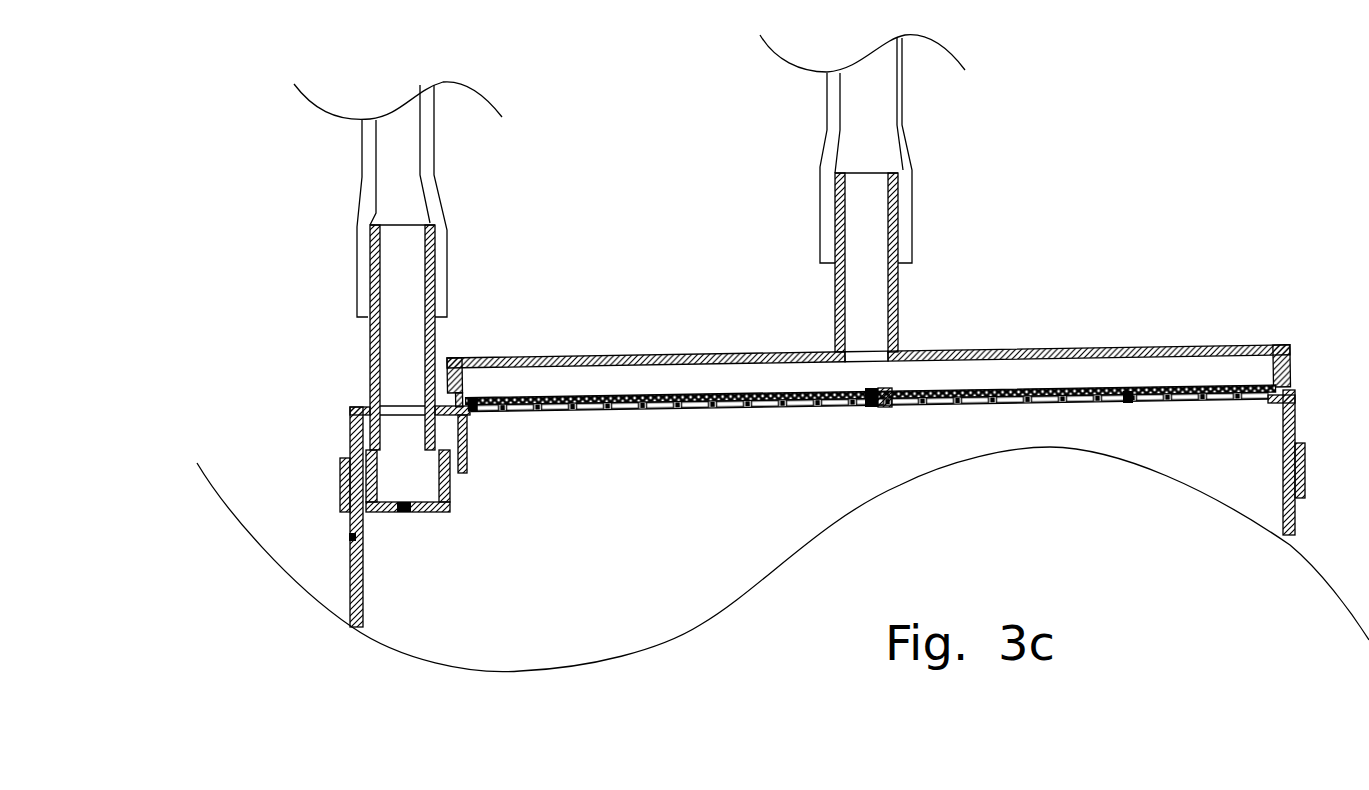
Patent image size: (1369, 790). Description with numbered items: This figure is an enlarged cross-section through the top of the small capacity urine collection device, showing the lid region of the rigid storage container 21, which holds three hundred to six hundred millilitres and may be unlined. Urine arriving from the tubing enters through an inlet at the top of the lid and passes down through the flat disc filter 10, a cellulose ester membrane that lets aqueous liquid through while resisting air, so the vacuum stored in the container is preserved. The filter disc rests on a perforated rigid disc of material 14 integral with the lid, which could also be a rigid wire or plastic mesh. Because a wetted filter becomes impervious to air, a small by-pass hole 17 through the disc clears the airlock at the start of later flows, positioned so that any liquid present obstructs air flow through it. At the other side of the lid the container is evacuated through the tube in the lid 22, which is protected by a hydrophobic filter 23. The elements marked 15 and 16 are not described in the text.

The flat disc filter 10 is at (1030, 388).
The rigid disc of material 14 is at (473, 405).
The electrode contact 15 is at (1131, 387).
The inlet tube 16 is at (858, 390).
The hole 17 is at (885, 390).
The rigid storage container 21 is at (351, 537).
The tube in the lid 22 is at (407, 385).
The hydrophobic filter 23 is at (407, 507).